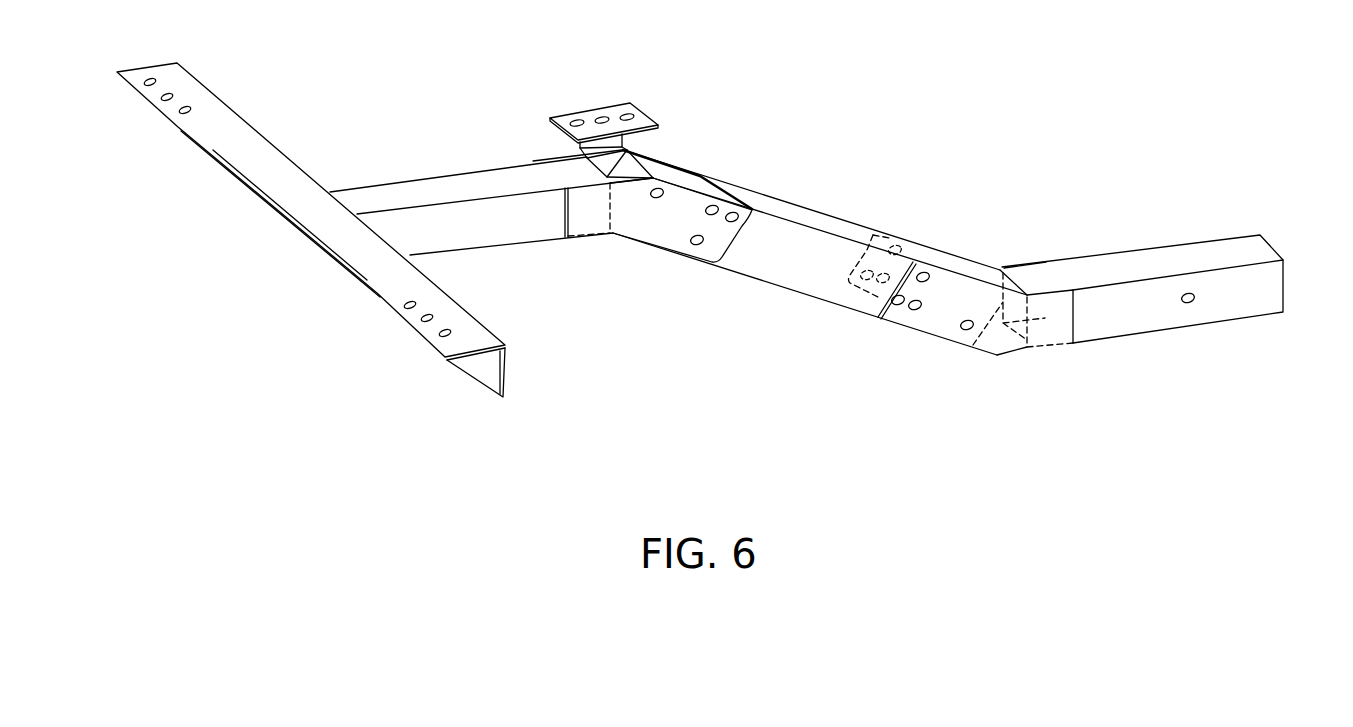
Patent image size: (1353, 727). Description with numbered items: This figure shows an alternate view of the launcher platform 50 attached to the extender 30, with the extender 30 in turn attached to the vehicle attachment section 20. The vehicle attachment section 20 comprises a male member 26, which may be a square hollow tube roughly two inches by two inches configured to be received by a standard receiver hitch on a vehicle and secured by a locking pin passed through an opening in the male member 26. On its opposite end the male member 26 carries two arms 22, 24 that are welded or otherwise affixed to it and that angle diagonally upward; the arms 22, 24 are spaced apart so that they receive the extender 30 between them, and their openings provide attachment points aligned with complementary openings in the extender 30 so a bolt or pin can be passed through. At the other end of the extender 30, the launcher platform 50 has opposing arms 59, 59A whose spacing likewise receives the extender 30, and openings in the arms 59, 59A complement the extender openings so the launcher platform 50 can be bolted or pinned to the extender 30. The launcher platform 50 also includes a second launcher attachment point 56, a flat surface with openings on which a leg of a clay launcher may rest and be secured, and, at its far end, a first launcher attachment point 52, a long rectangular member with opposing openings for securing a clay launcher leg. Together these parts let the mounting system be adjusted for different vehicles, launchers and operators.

The vehicle attachment section 20 is at (1147, 238).
The arm 22 is at (867, 240).
The arm 24 is at (927, 317).
The male member 26 is at (1245, 305).
The extender 30 is at (786, 192).
The launcher platform 50 is at (430, 152).
The first launcher attachment point 52 is at (261, 148).
The second launcher attachment point 56 is at (625, 102).
The arm 59 is at (643, 228).
The arm 59A is at (700, 172).